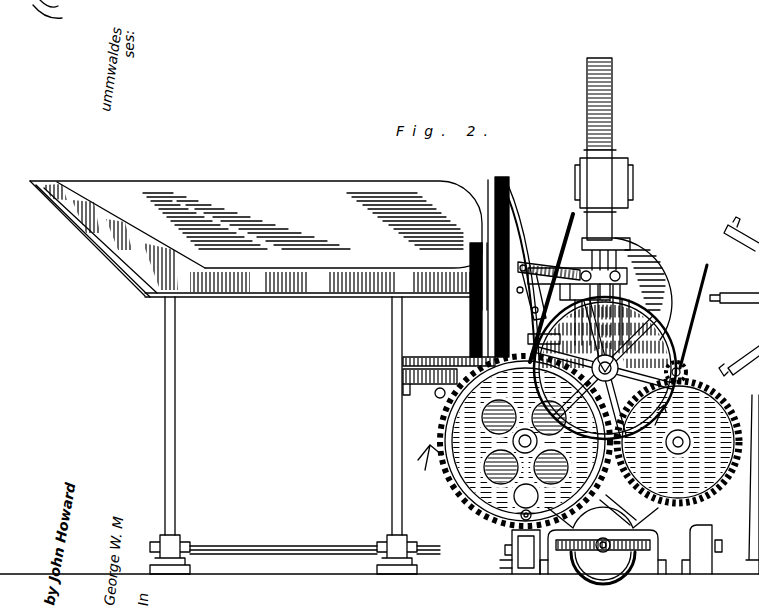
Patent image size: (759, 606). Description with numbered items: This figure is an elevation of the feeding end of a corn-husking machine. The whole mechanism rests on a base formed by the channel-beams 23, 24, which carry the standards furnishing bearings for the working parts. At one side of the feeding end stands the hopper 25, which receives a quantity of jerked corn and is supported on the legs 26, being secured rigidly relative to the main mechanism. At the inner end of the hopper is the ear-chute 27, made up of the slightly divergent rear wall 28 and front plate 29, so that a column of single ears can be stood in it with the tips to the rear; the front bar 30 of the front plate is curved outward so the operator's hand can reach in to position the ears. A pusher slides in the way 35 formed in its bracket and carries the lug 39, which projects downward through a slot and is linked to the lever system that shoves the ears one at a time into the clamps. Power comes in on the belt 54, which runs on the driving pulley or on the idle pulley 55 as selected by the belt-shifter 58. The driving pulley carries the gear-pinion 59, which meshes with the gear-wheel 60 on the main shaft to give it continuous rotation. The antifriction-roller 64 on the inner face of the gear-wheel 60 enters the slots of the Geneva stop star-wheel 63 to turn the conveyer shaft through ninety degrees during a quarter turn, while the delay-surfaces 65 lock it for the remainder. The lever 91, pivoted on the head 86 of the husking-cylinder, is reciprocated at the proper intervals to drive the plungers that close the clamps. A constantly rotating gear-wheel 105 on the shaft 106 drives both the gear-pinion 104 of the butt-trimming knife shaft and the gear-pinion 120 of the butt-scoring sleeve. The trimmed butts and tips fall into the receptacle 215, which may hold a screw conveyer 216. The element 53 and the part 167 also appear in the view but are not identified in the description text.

The channel-beam 23 is at (510, 570).
The channel-beam 24 is at (696, 566).
The hopper 25 is at (256, 239).
The legs 26 is at (195, 498).
The ear-chute 27 is at (485, 254).
The rear wall 28 is at (470, 319).
The front plate 29 is at (510, 180).
The front bar 30 is at (530, 228).
The way 35 is at (420, 357).
The lug 39 is at (436, 394).
The wheel 53 is at (605, 368).
The belt 54 is at (688, 342).
The idle pulley 55 is at (640, 345).
The belt-shifter 58 is at (604, 274).
The gear-pinion 59 is at (570, 214).
The gear-wheel 60 is at (460, 420).
The Geneva stop star-wheel 63 is at (620, 338).
The antifriction-roller 64 is at (525, 552).
The delay-surfaces 65 is at (512, 490).
The head 86 is at (653, 295).
The lever 91 is at (540, 262).
The gear-pinion 104 is at (618, 502).
The gear-wheel 105 is at (678, 442).
The shaft 106 is at (690, 442).
The gear-pinion 120 is at (686, 370).
The plunger post 167 is at (614, 112).
The receptacle 215 is at (642, 518).
The screw conveyer 216 is at (603, 557).